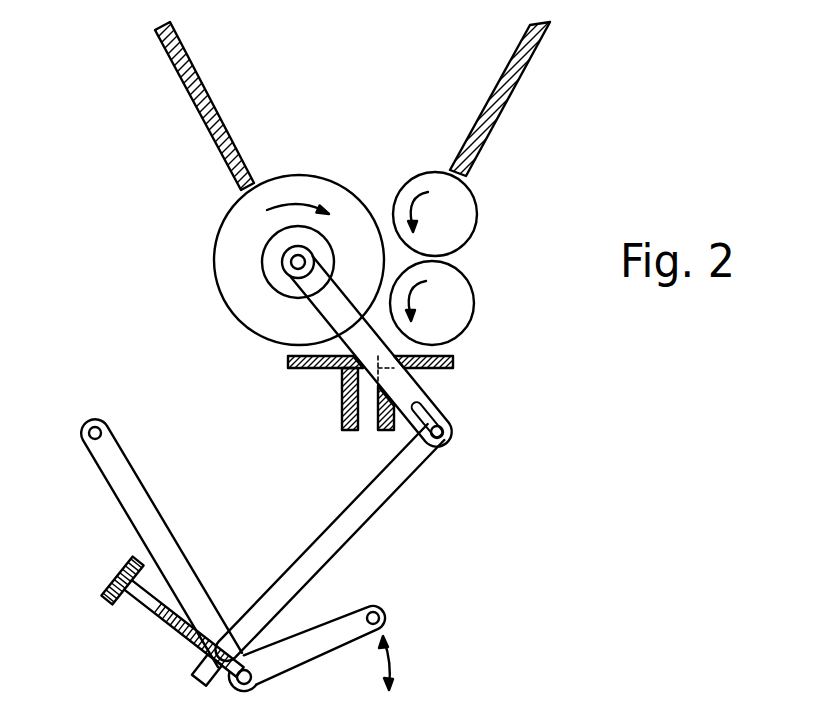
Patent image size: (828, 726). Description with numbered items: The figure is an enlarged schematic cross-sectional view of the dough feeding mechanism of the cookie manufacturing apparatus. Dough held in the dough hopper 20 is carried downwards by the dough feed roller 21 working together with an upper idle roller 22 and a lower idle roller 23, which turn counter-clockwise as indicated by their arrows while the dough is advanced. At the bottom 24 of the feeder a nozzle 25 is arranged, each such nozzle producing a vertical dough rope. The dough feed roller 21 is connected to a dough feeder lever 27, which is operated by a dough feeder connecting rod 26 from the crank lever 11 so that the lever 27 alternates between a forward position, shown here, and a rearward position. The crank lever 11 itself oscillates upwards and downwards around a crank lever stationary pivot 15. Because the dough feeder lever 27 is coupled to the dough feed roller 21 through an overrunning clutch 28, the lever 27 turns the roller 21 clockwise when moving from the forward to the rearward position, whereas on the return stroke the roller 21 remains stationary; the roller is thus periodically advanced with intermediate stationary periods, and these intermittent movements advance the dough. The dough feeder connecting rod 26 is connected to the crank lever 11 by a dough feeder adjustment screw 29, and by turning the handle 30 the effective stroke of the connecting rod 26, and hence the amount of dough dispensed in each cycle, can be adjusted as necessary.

The crank lever 11 is at (173, 546).
The crank lever stationary pivot 15 is at (256, 688).
The dough hopper 20 is at (198, 110).
The dough feed roller 21 is at (250, 315).
The upper idle roller 22 is at (466, 206).
The lower idle roller 23 is at (460, 296).
The bottom of feeder 24 is at (452, 368).
The nozzle 25 is at (342, 412).
The dough feeder connecting rod 26 is at (366, 514).
The dough feeder lever 27 is at (430, 406).
The overrunning clutch 28 is at (263, 265).
The dough feeder adjustment screw 29 is at (166, 638).
The handle 30 is at (116, 572).